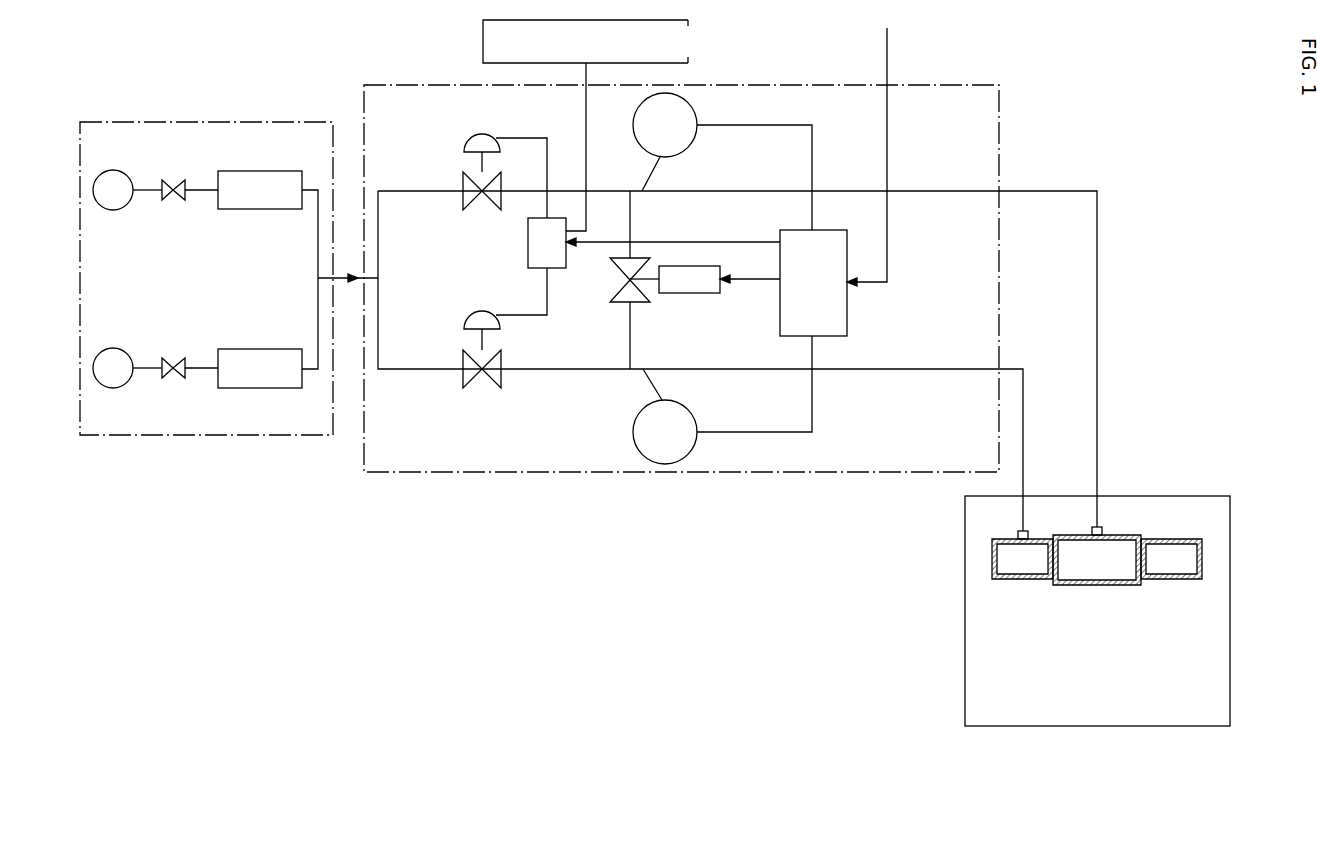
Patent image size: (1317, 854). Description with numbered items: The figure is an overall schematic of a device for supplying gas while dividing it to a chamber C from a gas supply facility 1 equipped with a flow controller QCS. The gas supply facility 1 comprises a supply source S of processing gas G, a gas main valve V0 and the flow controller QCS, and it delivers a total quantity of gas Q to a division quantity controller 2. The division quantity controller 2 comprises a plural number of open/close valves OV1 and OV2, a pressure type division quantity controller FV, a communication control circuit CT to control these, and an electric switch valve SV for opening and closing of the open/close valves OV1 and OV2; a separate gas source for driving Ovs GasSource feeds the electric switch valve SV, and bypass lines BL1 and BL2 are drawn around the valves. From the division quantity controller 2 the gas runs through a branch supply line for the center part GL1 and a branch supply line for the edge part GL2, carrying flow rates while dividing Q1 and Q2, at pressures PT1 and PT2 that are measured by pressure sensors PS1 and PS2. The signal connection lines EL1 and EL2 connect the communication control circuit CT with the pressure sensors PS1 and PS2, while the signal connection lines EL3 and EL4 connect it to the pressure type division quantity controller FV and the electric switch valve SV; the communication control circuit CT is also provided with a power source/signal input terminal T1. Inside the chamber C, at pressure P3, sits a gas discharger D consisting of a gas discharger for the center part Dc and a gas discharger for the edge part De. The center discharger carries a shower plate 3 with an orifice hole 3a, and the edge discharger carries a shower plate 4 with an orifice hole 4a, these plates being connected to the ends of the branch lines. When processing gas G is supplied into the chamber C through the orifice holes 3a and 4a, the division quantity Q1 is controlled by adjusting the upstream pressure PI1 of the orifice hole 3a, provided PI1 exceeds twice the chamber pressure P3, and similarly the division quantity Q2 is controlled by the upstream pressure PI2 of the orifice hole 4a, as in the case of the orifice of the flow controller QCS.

The gas supply facility 1 is at (228, 443).
The division quantity controller 2 is at (608, 476).
The supply source S is at (127, 279).
The gas main valve V0 is at (172, 180).
The flow controller QCS is at (251, 279).
The processing gas G is at (187, 391).
The total quantity of gas Q is at (348, 292).
The gas source for driving Ovs GasSource is at (628, 125).
The branch supply line for the center part GL1 is at (907, 191).
The branch supply line for the edge part GL2 is at (908, 371).
The division quantity Q1 is at (948, 225).
The division quantity Q2 is at (950, 401).
The open/close valve OV1 is at (478, 200).
The open/close valve OV2 is at (472, 380).
The electric switch valve SV is at (547, 243).
The signal connection line EL1 is at (723, 125).
The signal connection line EL2 is at (735, 433).
The signal connection line EL3 is at (742, 280).
The signal connection line EL4 is at (737, 242).
The pressure sensor PS1 is at (665, 142).
The pressure sensor PS2 is at (665, 416).
The pressure in branch supply line PT1 is at (702, 191).
The pressure in branch supply line PT2 is at (717, 370).
The bypass line 1 BL1 is at (630, 213).
The bypass line 2 BL2 is at (630, 347).
The pressure type division quantity controller FV is at (612, 290).
The communication control circuit CT is at (813, 283).
The power source/signal input terminal T1 is at (879, 157).
The chamber C is at (1230, 632).
The pressure inside chamber P3 is at (1000, 680).
The gas discharger D is at (1203, 528).
The gas discharger for the center part Dc is at (1118, 535).
The gas discharger for the edge part De is at (1165, 550).
The pressure on upstream side of orifice hole PI1 is at (1120, 560).
The pressure on upstream side of orifice hole PI2 is at (1008, 558).
The shower plate 3 is at (1097, 588).
The orifice hole 3a is at (1115, 588).
The shower plate 4 is at (1040, 580).
The orifice hole 4a is at (1018, 580).